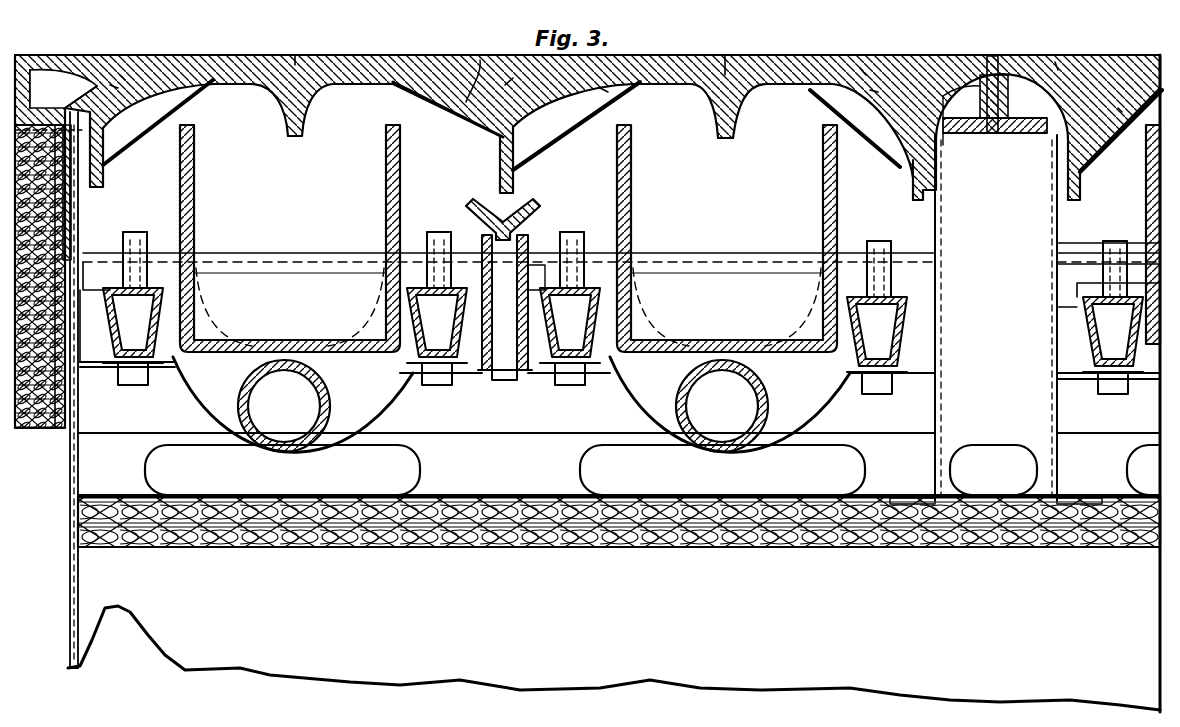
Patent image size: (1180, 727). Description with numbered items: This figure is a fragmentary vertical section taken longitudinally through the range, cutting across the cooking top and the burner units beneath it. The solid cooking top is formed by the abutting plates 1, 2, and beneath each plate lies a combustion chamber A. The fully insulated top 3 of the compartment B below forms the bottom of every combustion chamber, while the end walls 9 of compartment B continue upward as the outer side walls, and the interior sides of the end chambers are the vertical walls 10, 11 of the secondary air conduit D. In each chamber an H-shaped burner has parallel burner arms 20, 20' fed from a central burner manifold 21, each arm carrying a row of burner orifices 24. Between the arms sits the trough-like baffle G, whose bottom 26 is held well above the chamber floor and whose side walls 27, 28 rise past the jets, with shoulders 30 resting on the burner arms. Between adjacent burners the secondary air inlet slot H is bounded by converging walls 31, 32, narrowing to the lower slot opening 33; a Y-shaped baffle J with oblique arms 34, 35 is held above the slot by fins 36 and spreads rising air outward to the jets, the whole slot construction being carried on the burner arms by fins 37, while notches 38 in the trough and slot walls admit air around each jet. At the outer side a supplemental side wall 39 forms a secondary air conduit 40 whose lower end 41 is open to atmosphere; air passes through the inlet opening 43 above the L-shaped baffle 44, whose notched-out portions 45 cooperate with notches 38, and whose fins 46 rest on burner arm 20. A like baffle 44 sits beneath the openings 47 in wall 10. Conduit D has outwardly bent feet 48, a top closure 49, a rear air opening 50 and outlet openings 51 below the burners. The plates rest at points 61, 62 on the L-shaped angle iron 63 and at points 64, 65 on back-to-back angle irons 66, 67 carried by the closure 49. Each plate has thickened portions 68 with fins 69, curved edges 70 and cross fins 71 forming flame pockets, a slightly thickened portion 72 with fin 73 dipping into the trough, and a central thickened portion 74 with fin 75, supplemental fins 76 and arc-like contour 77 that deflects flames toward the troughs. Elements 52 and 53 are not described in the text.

The cooking top plate 1 is at (240, 56).
The cooking top plate 2 is at (1145, 67).
The fully insulated top of the chamber 3 is at (287, 548).
The end wall of the chamber 9 is at (437, 678).
The wall of the secondary air conduit 10 is at (937, 300).
The wall of the secondary air conduit 11 is at (1057, 307).
The burner arm 20 is at (619, 352).
The burner arm 20' is at (513, 393).
The burner manifold 21 is at (300, 374).
The burner orifices 24 is at (80, 230).
The bottom of the baffle 26 is at (260, 341).
The side wall of the baffle 27 is at (196, 153).
The side wall of the baffle 28 is at (386, 174).
The shoulders 30 is at (410, 274).
The wall of the secondary air inlet slot 31 is at (487, 340).
The wall of the secondary air inlet slot 32 is at (533, 374).
The slot opening 33 is at (500, 366).
The arm of the Y-shaped baffle 34 is at (488, 202).
The arm of the Y-shaped baffle 35 is at (540, 204).
The fins 36 is at (484, 232).
The fins 37 is at (470, 240).
The notches 38 is at (197, 225).
The supplemental side wall 39 is at (117, 310).
The secondary air conduit 40 is at (73, 370).
The lower end of the secondary air conduit 41 is at (48, 295).
The secondary air inlet opening 43 is at (87, 210).
The L-shaped baffle 44 is at (83, 207).
The notched-out portions 45 is at (140, 221).
The fins 46 is at (100, 130).
The secondary air inlet openings 47 is at (943, 217).
The outwardly bent lower ends 48 is at (908, 490).
The top closure 49 is at (990, 138).
The opening 50 is at (990, 457).
The secondary air outlet openings 51 is at (935, 451).
The slot 52 is at (1153, 460).
The side wall 53 is at (75, 468).
The supporting engagement 61 is at (22, 56).
The supporting engagement 62 is at (42, 80).
The L-shaped angle iron 63 is at (62, 82).
The supporting engagement 64 is at (990, 66).
The supporting engagement 65 is at (967, 100).
The angle iron 66 is at (975, 135).
The angle iron 67 is at (1010, 134).
The thickened portions 68 is at (57, 103).
The fins 69 is at (103, 157).
The curved edge 70 is at (117, 87).
The fins 71 is at (173, 93).
The slightly thickened portion 72 is at (296, 57).
The fin 73 is at (296, 122).
The thickened portion 74 is at (507, 84).
The fin 75 is at (527, 150).
The supplemental fins 76 is at (435, 101).
The arc-like contour 77 is at (474, 58).
The combustion chamber A is at (766, 163).
The compartment B is at (321, 623).
The secondary air conduit D is at (976, 336).
The trough-like baffle G is at (194, 188).
The secondary air inlet slot H is at (506, 271).
The Y-shaped baffle J is at (513, 210).